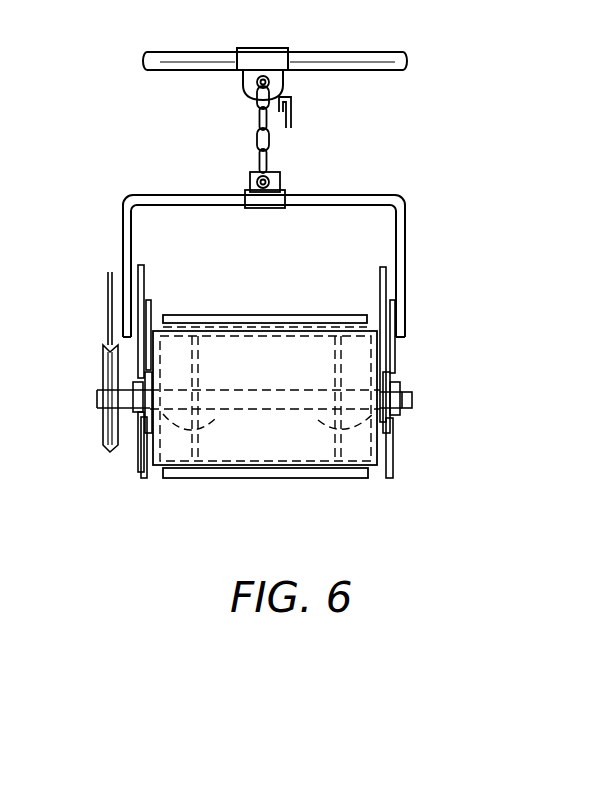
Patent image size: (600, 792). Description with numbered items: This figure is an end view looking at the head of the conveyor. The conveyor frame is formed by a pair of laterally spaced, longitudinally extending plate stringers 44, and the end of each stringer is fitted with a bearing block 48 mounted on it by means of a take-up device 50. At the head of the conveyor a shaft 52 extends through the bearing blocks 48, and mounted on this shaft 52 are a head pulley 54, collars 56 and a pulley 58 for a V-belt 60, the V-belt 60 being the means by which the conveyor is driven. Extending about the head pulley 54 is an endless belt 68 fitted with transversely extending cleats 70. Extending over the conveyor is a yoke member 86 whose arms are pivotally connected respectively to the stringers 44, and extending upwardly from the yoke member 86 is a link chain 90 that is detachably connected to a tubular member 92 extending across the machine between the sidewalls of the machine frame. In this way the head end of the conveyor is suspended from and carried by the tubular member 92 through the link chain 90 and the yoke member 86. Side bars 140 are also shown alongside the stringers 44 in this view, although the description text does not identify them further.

The tubular member 92 is at (329, 58).
The link chain 90 is at (257, 132).
The yoke member 86 is at (188, 197).
The side bars 140 is at (146, 282).
The plate stringers 44 is at (393, 447).
The V-belt 60 is at (108, 306).
The pulley 58 is at (103, 373).
The shaft 52 is at (413, 401).
The bearing block 48 is at (401, 386).
The take-up device 50 is at (394, 374).
The endless belt 68 is at (232, 330).
The cleats 70 is at (283, 330).
The head pulley 54 is at (257, 443).
The collars 56 is at (207, 428).